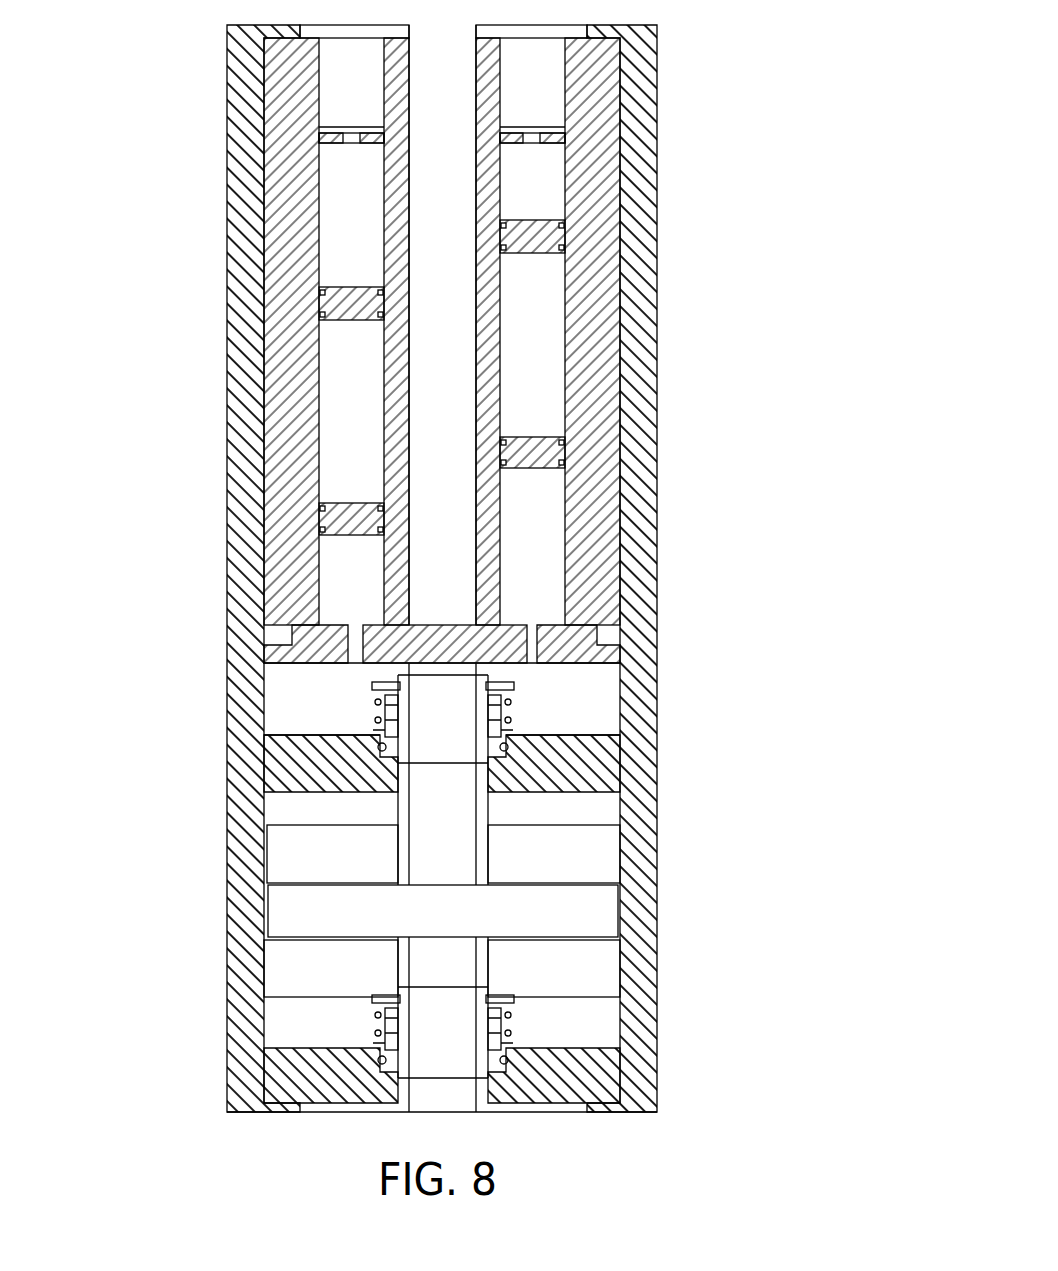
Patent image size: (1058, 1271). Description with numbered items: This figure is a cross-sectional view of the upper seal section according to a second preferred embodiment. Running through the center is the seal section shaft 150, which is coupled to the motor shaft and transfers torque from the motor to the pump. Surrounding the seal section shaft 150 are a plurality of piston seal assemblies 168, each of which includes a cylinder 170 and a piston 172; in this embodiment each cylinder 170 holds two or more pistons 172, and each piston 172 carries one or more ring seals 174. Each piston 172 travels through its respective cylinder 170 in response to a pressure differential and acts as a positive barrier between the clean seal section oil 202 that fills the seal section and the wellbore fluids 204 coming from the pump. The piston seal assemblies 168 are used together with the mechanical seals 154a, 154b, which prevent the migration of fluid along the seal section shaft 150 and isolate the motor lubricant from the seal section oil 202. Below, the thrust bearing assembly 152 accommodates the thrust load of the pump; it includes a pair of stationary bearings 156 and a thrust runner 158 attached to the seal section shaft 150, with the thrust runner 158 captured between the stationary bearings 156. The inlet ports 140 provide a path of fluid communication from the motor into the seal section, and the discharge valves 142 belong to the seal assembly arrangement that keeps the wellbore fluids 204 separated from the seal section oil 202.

The inlet ports 140 is at (340, 645).
The discharge valves 142 is at (335, 97).
The seal section shaft 150 is at (453, 812).
The thrust bearing assembly 152 is at (664, 928).
The mechanical seal 154a is at (373, 1017).
The mechanical seal 154b is at (365, 737).
The stationary bearings 156 is at (587, 848).
The thrust runner 158 is at (578, 917).
The piston seal assemblies 168 is at (275, 320).
The cylinder 170 is at (319, 157).
The piston 172 is at (337, 290).
The ring seals 174 is at (319, 293).
The seal section oil 202 is at (372, 214).
The wellbore fluids 204 is at (372, 74).